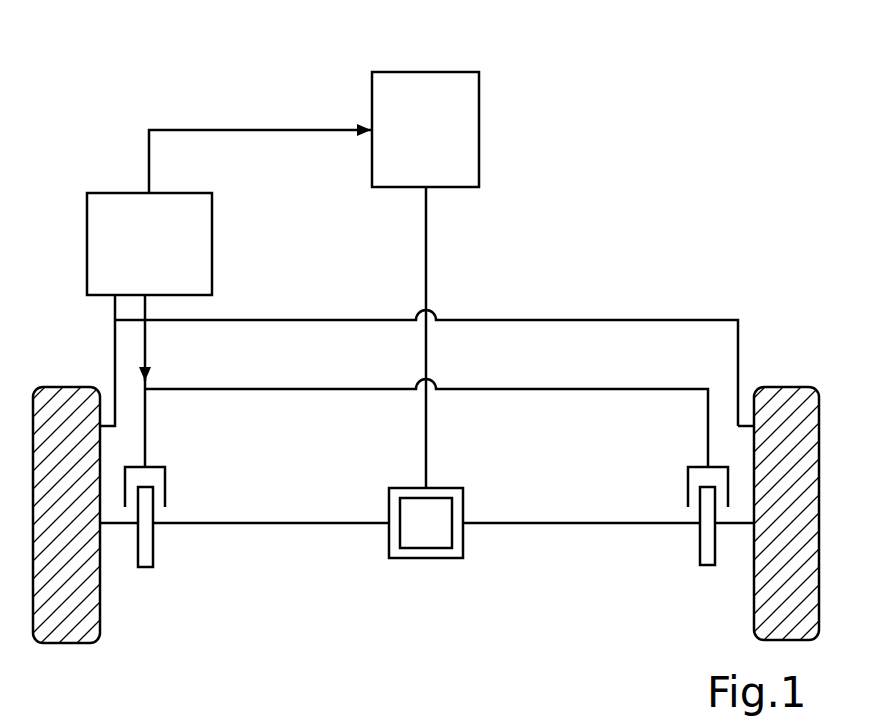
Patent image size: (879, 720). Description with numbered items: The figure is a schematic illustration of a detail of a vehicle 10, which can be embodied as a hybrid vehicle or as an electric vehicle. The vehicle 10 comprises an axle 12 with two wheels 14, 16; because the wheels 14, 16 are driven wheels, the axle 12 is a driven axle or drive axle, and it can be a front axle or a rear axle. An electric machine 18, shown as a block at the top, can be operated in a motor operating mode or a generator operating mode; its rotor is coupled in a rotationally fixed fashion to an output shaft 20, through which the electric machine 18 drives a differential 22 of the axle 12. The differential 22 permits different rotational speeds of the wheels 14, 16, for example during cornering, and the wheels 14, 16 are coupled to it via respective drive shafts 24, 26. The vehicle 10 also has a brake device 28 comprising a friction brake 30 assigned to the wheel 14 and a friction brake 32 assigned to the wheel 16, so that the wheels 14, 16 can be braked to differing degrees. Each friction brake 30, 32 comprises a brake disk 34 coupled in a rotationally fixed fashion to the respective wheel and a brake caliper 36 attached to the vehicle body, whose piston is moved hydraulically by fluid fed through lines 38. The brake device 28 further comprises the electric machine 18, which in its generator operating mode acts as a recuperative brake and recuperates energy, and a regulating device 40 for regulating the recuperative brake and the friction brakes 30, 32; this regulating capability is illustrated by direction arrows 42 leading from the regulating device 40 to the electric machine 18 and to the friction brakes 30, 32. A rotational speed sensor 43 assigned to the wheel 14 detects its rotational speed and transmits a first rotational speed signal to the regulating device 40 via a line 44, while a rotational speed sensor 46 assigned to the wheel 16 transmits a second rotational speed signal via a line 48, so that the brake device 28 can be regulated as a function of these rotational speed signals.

The vehicle 10 is at (672, 98).
The axle 12 is at (63, 378).
The wheel 14 is at (80, 387).
The wheel 16 is at (804, 387).
The electric machine 18 is at (479, 110).
The output shaft 20 is at (426, 235).
The differential 22 is at (468, 541).
The drive shaft 24 is at (295, 520).
The drive shaft 26 is at (553, 522).
The brake device 28 is at (195, 88).
The friction brake 30 is at (424, 549).
The friction brake 32 is at (700, 579).
The brake disk 34 is at (138, 570).
The brake caliper 36 is at (165, 478).
The lines 38 is at (315, 385).
The regulating device 40 is at (212, 233).
The direction arrows 42 is at (255, 130).
The rotational speed sensor 43 is at (101, 428).
The line 44 is at (115, 312).
The rotational speed sensor 46 is at (743, 420).
The line 48 is at (688, 320).